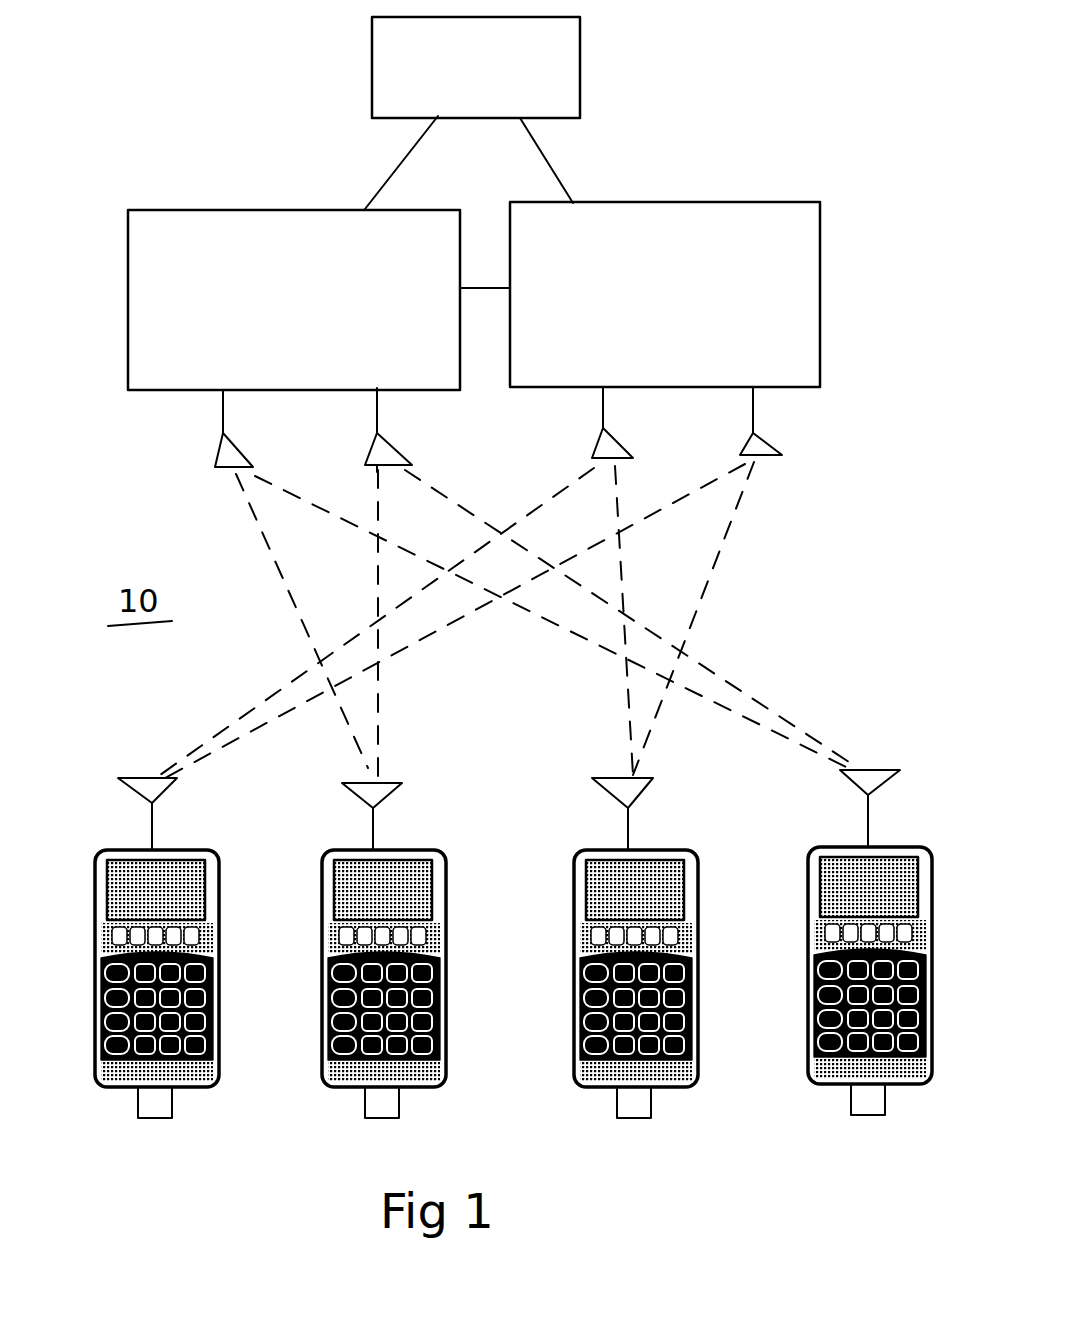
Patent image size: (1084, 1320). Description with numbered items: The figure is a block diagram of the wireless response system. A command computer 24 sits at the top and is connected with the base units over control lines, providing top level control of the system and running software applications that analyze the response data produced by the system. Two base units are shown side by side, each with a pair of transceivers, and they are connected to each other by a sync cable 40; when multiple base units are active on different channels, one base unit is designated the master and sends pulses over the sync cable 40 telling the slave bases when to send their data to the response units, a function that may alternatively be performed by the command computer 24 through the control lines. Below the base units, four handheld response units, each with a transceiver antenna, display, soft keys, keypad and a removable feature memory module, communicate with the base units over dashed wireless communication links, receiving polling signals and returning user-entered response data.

The command computer 24 is at (583, 60).
The sync cable 40 is at (472, 255).